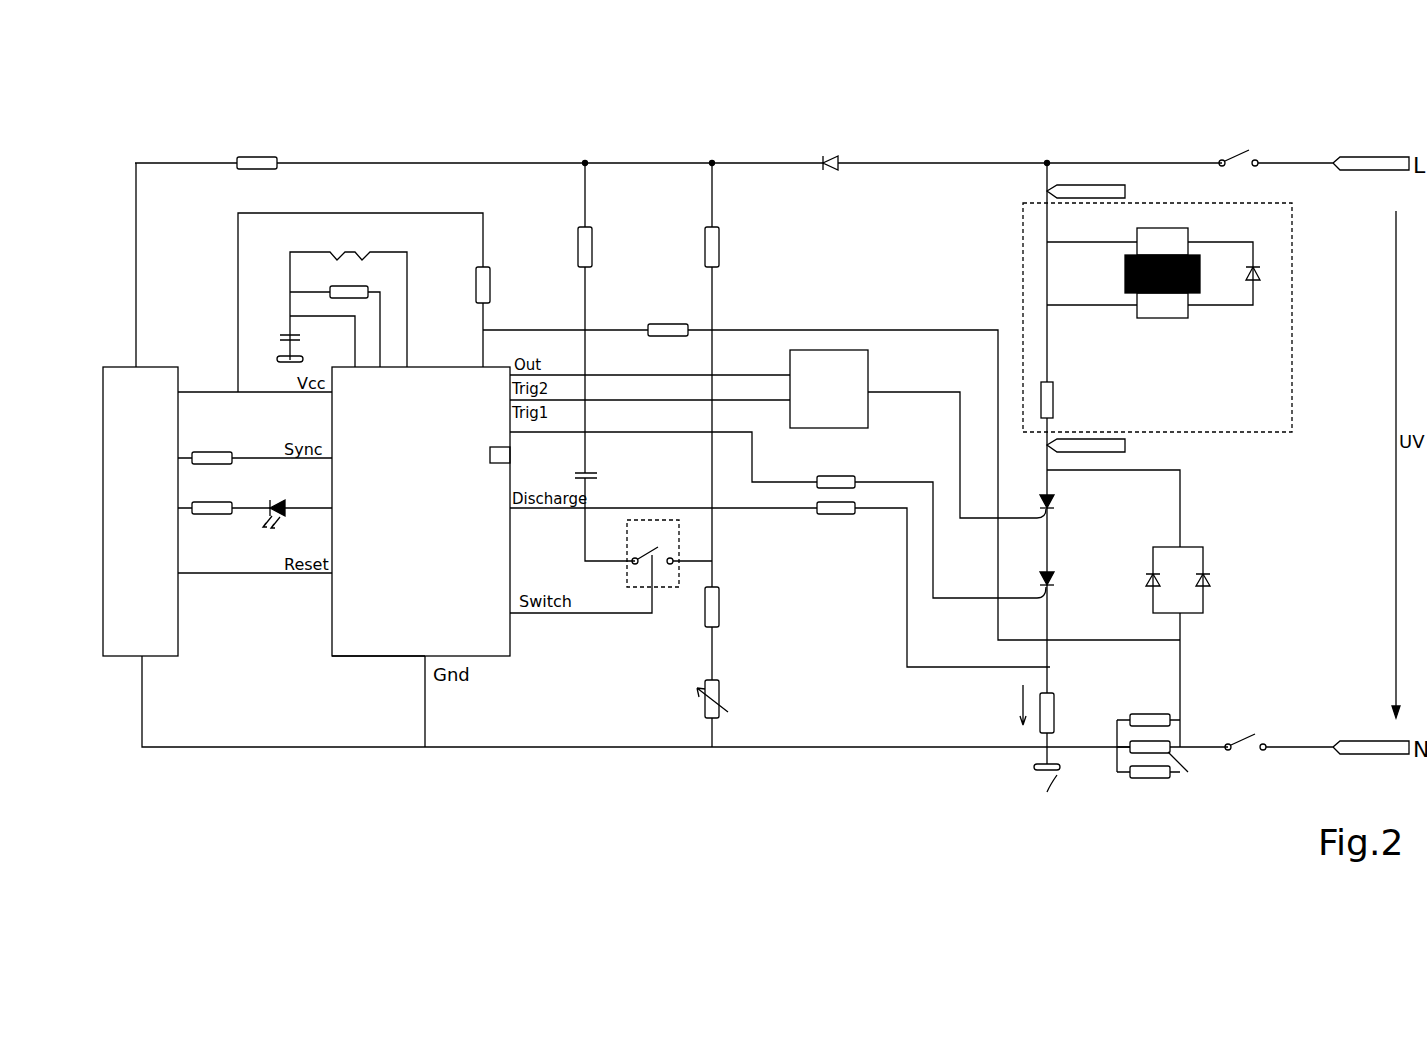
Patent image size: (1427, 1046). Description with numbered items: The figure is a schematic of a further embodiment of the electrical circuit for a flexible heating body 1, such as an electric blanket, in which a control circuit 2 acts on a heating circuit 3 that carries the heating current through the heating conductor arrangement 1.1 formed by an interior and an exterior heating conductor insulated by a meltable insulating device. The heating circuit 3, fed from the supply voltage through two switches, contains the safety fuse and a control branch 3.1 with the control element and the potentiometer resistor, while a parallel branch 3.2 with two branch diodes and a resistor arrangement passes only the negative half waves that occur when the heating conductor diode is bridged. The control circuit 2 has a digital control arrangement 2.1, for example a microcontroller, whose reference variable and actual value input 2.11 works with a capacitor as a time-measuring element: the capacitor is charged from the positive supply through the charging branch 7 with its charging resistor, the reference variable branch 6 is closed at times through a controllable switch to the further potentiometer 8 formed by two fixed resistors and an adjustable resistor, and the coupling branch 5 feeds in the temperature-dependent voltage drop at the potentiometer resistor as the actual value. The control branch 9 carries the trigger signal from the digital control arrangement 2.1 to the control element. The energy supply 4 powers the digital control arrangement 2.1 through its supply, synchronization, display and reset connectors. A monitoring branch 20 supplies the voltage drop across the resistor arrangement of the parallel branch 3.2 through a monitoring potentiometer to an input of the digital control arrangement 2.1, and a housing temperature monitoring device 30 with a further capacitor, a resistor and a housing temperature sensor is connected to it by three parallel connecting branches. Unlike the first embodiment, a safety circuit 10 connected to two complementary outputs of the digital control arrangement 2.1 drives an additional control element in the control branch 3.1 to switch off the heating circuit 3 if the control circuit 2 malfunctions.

The flexible heating body 1 is at (1157, 340).
The heating conductor arrangement 1.1 is at (1167, 292).
The control circuit 2 is at (512, 659).
The digital control arrangement 2.1 is at (378, 659).
The reference variable/actual value connector 2.11 is at (493, 465).
The heating circuit 3 is at (1109, 486).
The control branch 3.1 is at (1057, 561).
The parallel branch 3.2 is at (1194, 559).
The energy supply 4 is at (180, 657).
The coupling branch 5 is at (780, 584).
The reference variable branch 6 is at (611, 592).
The charging branch 7 is at (605, 362).
The further potentiometer 8 is at (729, 455).
The control branch 9 is at (778, 514).
The safety circuit 10 is at (813, 350).
The monitoring branch 20 is at (831, 457).
The housing temperature monitoring device 30 is at (378, 302).